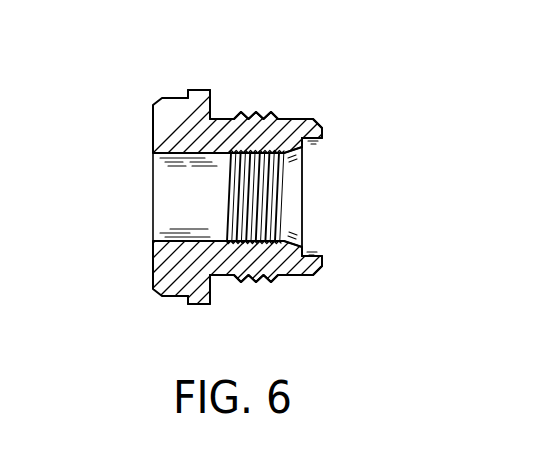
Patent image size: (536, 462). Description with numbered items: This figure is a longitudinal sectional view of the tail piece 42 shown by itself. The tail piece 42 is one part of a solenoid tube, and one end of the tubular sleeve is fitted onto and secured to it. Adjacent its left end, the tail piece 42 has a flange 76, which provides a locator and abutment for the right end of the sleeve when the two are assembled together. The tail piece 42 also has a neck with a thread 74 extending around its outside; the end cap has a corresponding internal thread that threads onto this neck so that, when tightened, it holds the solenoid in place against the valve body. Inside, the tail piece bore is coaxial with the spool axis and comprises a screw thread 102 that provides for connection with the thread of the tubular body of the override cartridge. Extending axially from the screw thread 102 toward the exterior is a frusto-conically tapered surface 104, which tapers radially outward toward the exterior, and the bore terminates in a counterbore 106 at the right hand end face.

The tail piece 42 is at (157, 101).
The flange 76 is at (194, 90).
The thread 74 is at (248, 117).
The counterbore 106 is at (313, 162).
The frusto-conically tapered surface 104 is at (295, 190).
The screw thread 102 is at (272, 210).